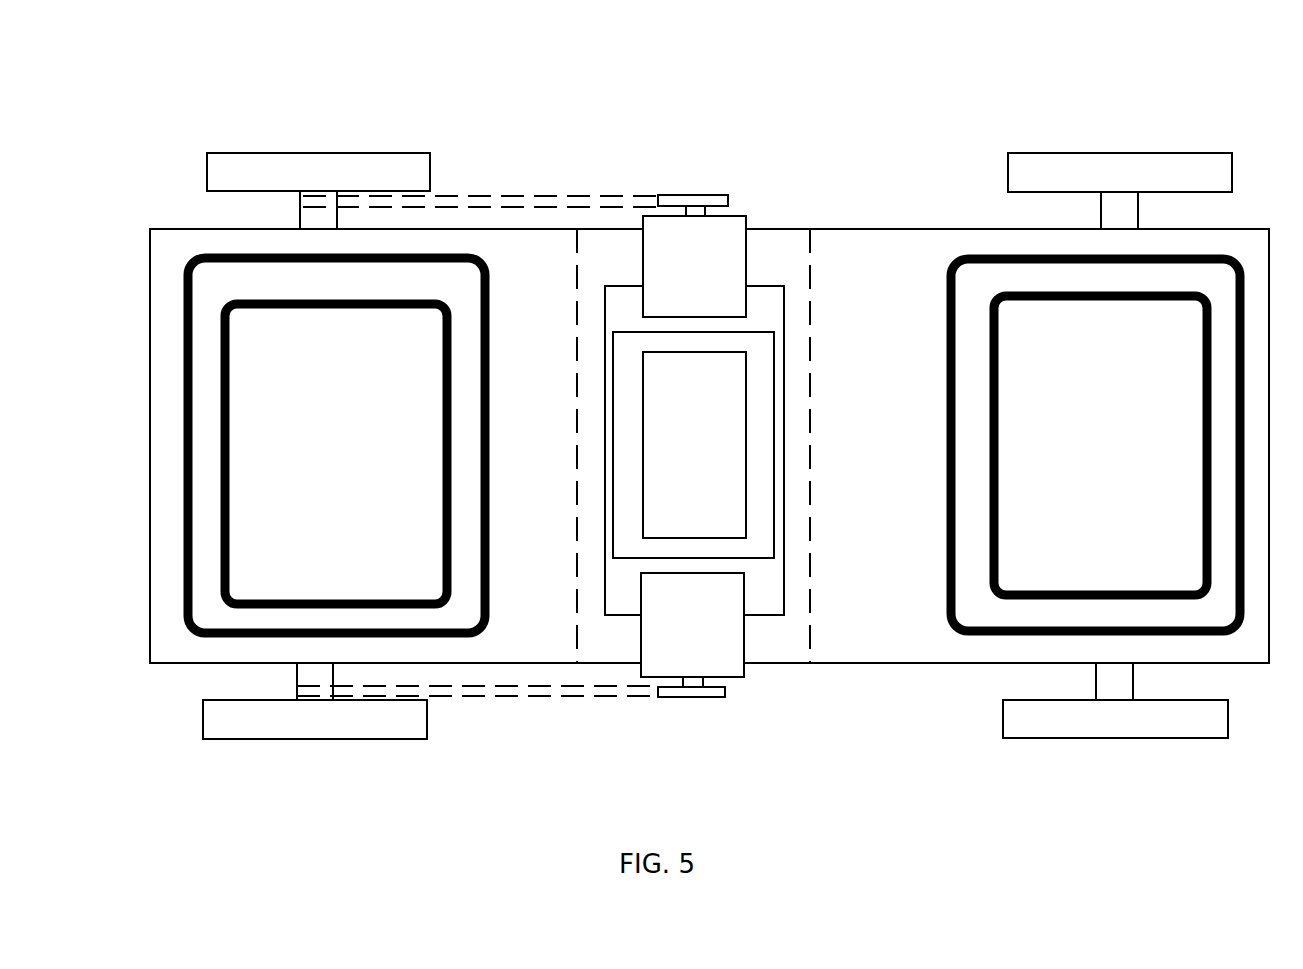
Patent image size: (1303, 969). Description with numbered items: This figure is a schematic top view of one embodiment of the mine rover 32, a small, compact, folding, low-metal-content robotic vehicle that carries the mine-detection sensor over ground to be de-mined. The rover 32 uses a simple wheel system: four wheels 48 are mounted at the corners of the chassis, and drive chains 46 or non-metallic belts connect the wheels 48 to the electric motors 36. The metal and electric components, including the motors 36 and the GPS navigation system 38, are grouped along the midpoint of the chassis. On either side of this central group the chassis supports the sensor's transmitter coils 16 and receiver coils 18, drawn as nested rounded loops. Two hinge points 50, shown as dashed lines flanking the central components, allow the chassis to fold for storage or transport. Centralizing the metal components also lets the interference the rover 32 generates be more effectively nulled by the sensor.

The mine rover 32 is at (998, 72).
The transmitter coils 16 is at (487, 380).
The receiver coils 18 is at (448, 365).
The electric motors 36 is at (677, 281).
The GPS navigation system 38 is at (677, 459).
The drive chains 46 is at (548, 195).
The wheels 48 is at (1136, 184).
The hinge points 50 is at (812, 285).